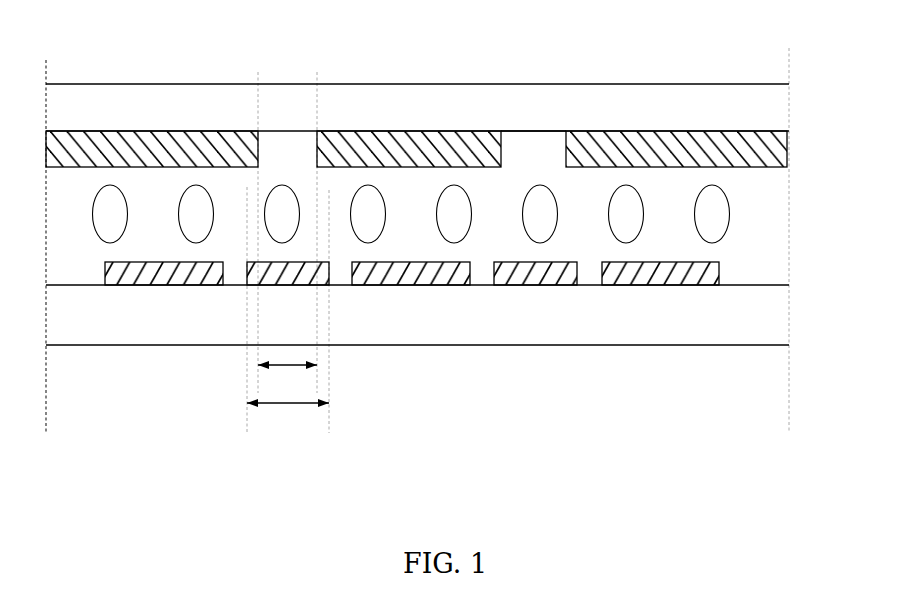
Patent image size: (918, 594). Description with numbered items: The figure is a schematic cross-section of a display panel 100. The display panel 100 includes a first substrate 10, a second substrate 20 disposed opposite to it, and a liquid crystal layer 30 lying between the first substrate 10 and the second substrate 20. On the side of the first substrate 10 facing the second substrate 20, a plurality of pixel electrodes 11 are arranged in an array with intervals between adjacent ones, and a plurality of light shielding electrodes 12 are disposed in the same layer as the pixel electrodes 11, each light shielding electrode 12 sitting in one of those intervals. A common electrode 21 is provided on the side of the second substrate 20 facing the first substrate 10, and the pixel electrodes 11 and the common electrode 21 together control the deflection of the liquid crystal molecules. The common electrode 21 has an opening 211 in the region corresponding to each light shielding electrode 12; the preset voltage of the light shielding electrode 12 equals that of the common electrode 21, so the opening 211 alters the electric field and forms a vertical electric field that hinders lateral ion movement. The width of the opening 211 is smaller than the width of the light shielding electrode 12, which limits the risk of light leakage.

The display panel 100 is at (238, 58).
The first substrate 10 is at (730, 315).
The pixel electrodes 11 is at (408, 273).
The light shielding electrodes 12 is at (532, 273).
The second substrate 20 is at (730, 102).
The common electrode 21 is at (732, 150).
The opening 211 is at (532, 148).
The liquid crystal layer 30 is at (717, 215).